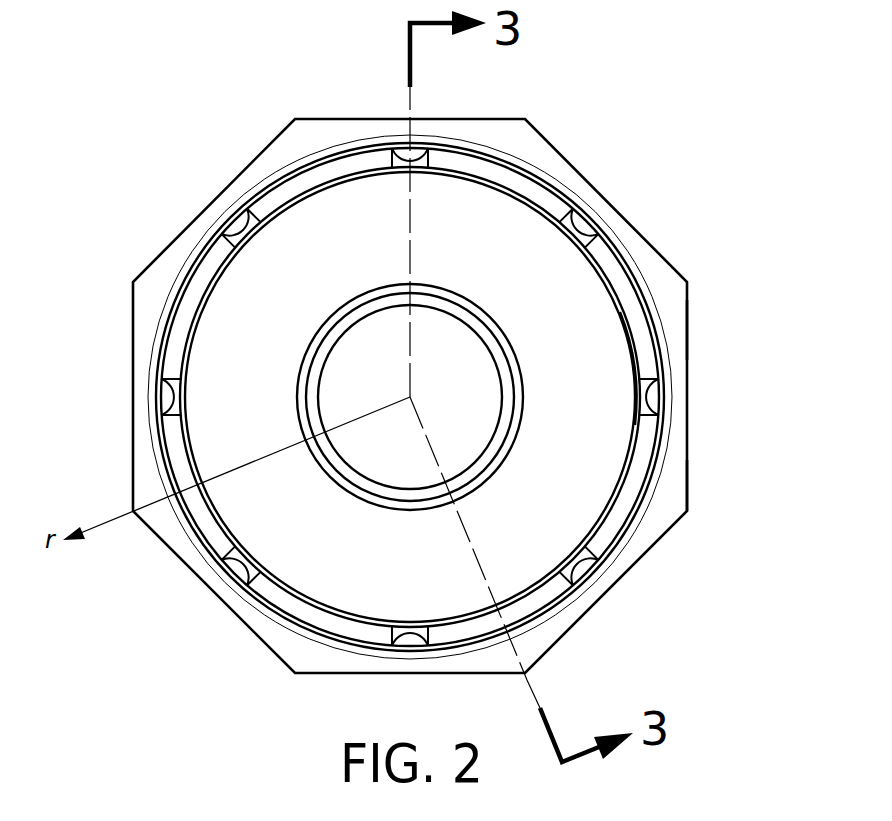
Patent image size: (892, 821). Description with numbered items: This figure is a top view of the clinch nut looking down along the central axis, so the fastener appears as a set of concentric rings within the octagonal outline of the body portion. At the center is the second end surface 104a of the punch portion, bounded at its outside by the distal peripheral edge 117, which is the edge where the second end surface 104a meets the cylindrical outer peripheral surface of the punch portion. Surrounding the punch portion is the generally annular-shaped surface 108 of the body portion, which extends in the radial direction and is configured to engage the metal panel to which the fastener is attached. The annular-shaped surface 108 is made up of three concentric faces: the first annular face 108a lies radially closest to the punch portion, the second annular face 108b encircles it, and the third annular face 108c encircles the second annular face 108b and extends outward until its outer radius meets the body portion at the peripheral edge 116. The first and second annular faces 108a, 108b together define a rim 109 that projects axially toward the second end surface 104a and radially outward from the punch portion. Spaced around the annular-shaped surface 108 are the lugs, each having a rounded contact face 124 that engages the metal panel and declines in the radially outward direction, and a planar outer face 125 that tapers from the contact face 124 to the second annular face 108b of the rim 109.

The second end surface 104a is at (353, 279).
The annular-shaped surface 108 is at (662, 266).
The first annular face 108a is at (650, 432).
The second annular face 108b is at (668, 364).
The third annular face 108c is at (680, 330).
The rim 109 is at (630, 250).
The peripheral edge 116 is at (687, 500).
The distal peripheral edge 117 is at (610, 520).
The contact face 124 is at (580, 558).
The outer face 125 is at (582, 570).